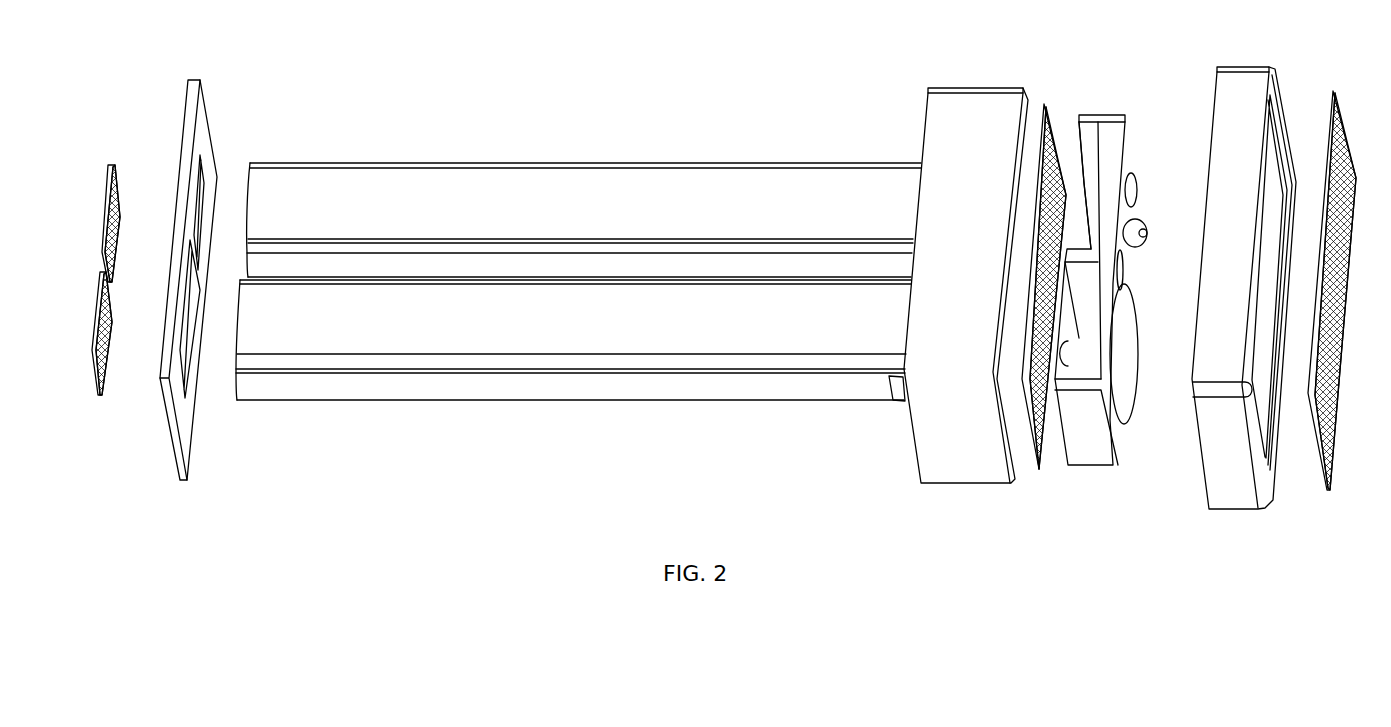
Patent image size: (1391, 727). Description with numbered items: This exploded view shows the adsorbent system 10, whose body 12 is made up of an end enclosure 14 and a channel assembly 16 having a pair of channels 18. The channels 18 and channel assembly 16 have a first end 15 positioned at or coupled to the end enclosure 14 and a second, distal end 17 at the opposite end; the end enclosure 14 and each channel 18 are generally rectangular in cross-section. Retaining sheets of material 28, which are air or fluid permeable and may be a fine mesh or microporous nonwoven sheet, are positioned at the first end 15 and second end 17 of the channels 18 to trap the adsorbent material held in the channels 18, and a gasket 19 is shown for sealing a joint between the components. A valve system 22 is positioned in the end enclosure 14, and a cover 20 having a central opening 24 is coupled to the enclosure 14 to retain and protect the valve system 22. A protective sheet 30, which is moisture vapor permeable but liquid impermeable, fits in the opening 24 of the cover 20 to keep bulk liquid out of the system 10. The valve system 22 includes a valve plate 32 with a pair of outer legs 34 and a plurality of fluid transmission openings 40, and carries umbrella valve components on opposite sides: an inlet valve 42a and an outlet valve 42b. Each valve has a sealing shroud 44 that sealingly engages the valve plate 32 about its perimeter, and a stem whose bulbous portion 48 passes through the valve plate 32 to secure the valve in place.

The adsorbent system 10 is at (590, 457).
The body 12 is at (835, 115).
The end enclosure 14 is at (965, 477).
The first end 15 is at (877, 352).
The channel assembly 16 is at (578, 288).
The second end 17 is at (290, 392).
The channel 18 is at (401, 183).
The gasket 19 is at (183, 438).
The cover 20 is at (1254, 309).
The valve system 22 is at (1075, 482).
The central opening 24 is at (1275, 193).
The retaining sheet 28 is at (120, 222).
The protective sheet 30 is at (1332, 332).
The valve plate 32 is at (1061, 296).
The outer leg 34 is at (1089, 462).
The fluid transmission opening 40 is at (1135, 182).
The inlet valve 42a is at (1082, 218).
The outlet valve 42b is at (1125, 396).
The sealing shroud 44 is at (1129, 328).
The bulbous portion 48 is at (1135, 221).